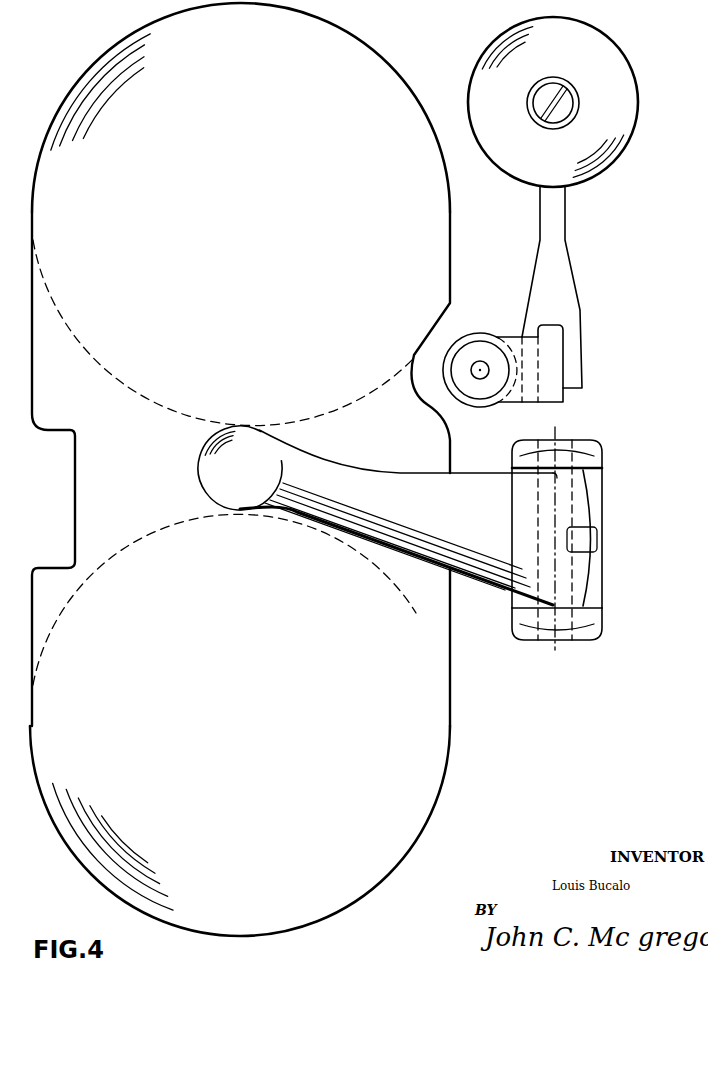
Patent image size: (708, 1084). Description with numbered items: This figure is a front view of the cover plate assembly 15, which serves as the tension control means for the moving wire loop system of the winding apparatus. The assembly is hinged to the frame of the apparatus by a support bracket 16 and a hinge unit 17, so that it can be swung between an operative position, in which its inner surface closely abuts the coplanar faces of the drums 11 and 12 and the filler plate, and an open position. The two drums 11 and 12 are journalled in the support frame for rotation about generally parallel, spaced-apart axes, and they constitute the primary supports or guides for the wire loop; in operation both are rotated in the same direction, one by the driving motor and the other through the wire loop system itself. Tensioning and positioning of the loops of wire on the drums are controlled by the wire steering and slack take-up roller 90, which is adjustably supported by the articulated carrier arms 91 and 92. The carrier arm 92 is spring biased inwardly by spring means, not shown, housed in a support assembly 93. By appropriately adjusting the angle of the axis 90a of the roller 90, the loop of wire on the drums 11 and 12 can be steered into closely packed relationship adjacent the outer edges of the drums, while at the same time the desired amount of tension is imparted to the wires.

The drum 11 is at (342, 58).
The drum 12 is at (418, 752).
The cover plate assembly 15 is at (392, 118).
The support bracket 16 is at (390, 535).
The hinge unit 17 is at (603, 606).
The wire steering and slack take-up roller 90 is at (460, 334).
The axis of the roller 90a is at (482, 362).
The articulated carrier arm 91 is at (494, 388).
The articulated carrier arm 92 is at (540, 214).
The support assembly 93 is at (513, 160).